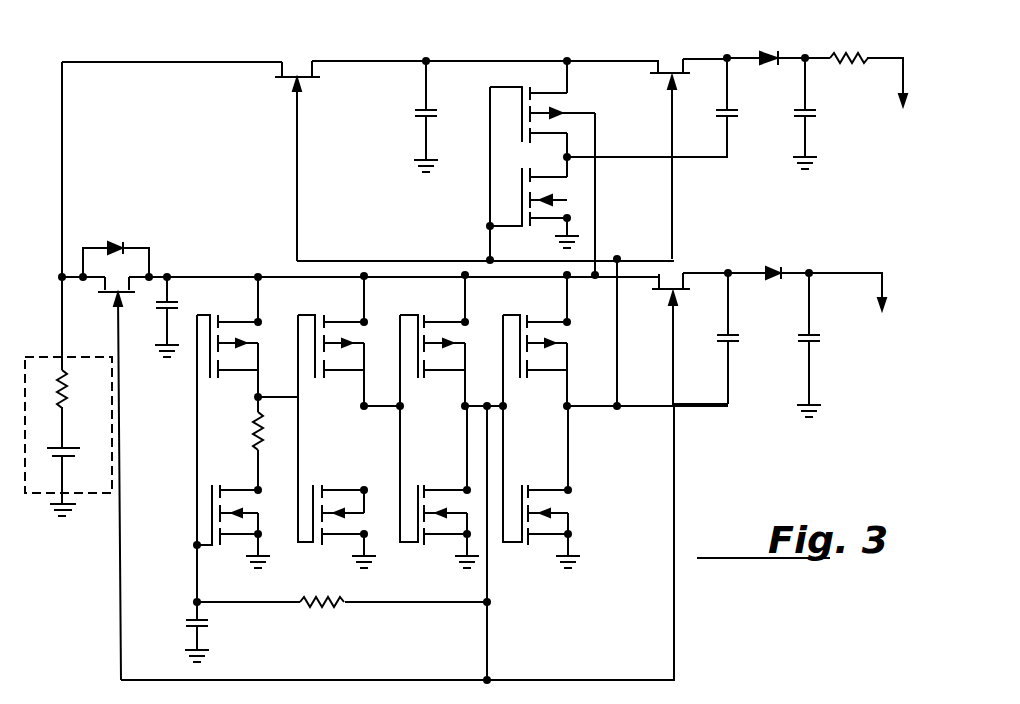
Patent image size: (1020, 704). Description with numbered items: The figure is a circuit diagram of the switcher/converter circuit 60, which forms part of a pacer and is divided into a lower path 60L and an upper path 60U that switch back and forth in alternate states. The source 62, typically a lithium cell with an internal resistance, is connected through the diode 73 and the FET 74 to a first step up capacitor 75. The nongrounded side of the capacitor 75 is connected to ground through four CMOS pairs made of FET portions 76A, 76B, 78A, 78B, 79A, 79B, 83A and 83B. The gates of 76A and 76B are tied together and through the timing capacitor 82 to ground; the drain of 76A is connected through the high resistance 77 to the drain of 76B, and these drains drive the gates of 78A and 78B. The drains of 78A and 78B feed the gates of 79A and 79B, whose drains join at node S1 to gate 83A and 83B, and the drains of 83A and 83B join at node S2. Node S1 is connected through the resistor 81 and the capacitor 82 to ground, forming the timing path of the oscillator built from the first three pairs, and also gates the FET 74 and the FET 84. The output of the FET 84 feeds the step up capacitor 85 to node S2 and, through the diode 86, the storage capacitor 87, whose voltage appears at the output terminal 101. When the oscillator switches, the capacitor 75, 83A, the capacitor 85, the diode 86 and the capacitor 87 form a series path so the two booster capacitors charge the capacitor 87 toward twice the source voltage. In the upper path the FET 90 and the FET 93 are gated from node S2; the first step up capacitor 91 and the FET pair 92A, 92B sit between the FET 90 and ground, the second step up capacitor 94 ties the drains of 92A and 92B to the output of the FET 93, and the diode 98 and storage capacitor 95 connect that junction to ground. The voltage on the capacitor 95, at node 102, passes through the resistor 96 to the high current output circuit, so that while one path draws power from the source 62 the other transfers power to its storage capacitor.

The switcher/converter circuit 60 is at (923, 305).
The upper path 60U is at (765, 205).
The lower path 60L is at (777, 481).
The source 62 is at (37, 352).
The diode 73 is at (118, 236).
The FET 74 is at (118, 284).
The first step up capacitor 75 is at (179, 304).
The FET portion of first CMOS pair 76A is at (244, 355).
The FET portion of first CMOS pair 76B is at (246, 504).
The high resistance 77 is at (268, 437).
The FET portion of second CMOS pair 78A is at (350, 356).
The FET portion of second CMOS pair 78B is at (352, 498).
The FET portion of third CMOS pair 79A is at (452, 357).
The FET portion of third CMOS pair 79B is at (440, 498).
The resistor 81 is at (332, 610).
The timing capacitor 82 is at (212, 627).
The FET portion of fourth CMOS pair 83A is at (558, 353).
The FET portion of fourth CMOS pair 83B is at (564, 500).
The FET 84 is at (657, 294).
The step up capacitor 85 is at (733, 345).
The diode 86 is at (769, 268).
The storage capacitor 87 is at (816, 345).
The FET 90 is at (276, 72).
The first step up capacitor 91 is at (420, 110).
The FET of FET pair 92A is at (560, 103).
The FET of FET pair 92B is at (575, 197).
The FET 93 is at (664, 68).
The second step up capacitor 94 is at (733, 118).
The storage capacitor 95 is at (815, 119).
The resistor 96 is at (858, 54).
The diode 98 is at (770, 52).
The output terminal 101 is at (812, 270).
The node 102 is at (806, 55).
The node S1 is at (492, 676).
The node S2 is at (619, 410).